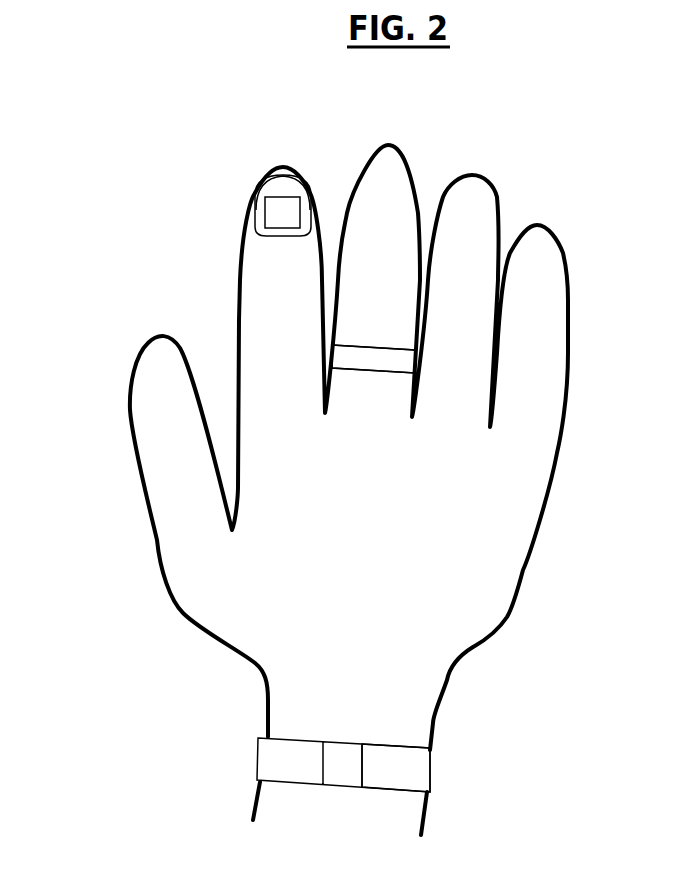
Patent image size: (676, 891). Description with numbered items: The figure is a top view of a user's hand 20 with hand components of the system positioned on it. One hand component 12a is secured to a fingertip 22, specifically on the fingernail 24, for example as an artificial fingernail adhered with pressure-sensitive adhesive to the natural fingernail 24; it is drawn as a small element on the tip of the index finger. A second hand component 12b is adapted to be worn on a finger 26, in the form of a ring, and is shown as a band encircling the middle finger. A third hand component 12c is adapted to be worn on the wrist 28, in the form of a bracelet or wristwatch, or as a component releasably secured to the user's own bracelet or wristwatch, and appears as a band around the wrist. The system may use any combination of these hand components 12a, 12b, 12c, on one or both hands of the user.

The hand 20 is at (126, 148).
The fingertip 22 is at (280, 168).
The fingernail 24 is at (283, 188).
The hand component 12a is at (273, 217).
The finger 26 is at (398, 143).
The hand component 12b is at (382, 352).
The wrist 28 is at (433, 737).
The hand component 12c is at (432, 773).